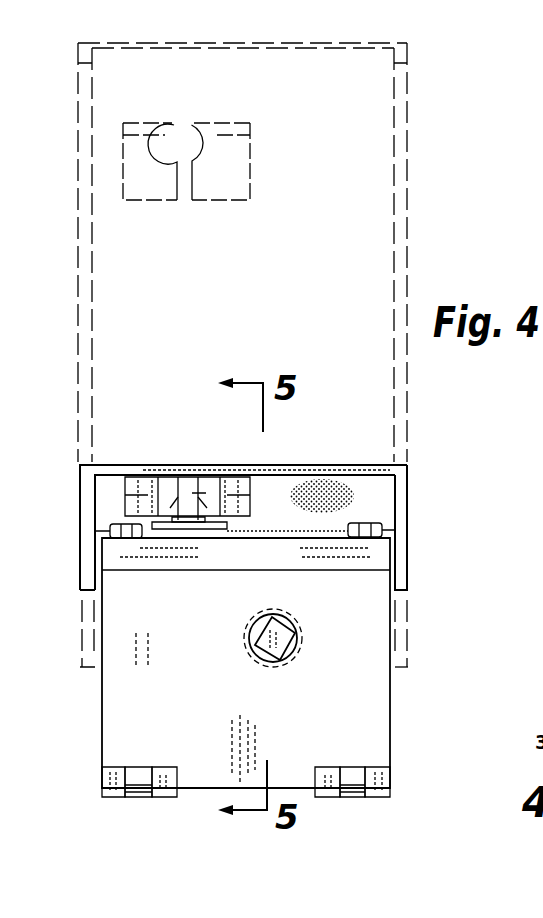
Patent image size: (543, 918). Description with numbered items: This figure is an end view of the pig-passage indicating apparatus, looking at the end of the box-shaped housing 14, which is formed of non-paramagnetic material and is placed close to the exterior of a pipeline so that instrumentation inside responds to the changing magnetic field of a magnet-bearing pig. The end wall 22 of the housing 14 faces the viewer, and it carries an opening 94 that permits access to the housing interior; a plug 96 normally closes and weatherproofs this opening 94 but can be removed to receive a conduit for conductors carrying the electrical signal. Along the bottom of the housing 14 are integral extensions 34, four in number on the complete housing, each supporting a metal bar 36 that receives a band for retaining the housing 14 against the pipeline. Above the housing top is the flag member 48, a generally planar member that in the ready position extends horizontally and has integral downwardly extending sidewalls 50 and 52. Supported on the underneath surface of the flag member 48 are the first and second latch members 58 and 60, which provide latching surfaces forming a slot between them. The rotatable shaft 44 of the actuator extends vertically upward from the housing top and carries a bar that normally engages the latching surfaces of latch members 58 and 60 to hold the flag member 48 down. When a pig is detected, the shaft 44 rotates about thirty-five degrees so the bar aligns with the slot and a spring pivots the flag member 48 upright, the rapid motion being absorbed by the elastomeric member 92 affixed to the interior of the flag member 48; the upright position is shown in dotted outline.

The housing 14 is at (424, 630).
The end wall 22 is at (166, 615).
The integral extension 34 is at (165, 773).
The metal bar 36 is at (138, 783).
The rotatable shaft 44 is at (195, 468).
The flag member 48 is at (407, 255).
The sidewall 50 is at (87, 520).
The sidewall 52 is at (402, 552).
The first latch member 58 is at (240, 157).
The second latch member 60 is at (148, 185).
The elastomeric member 92 is at (367, 492).
The opening 94 is at (284, 641).
The plug 96 is at (276, 628).